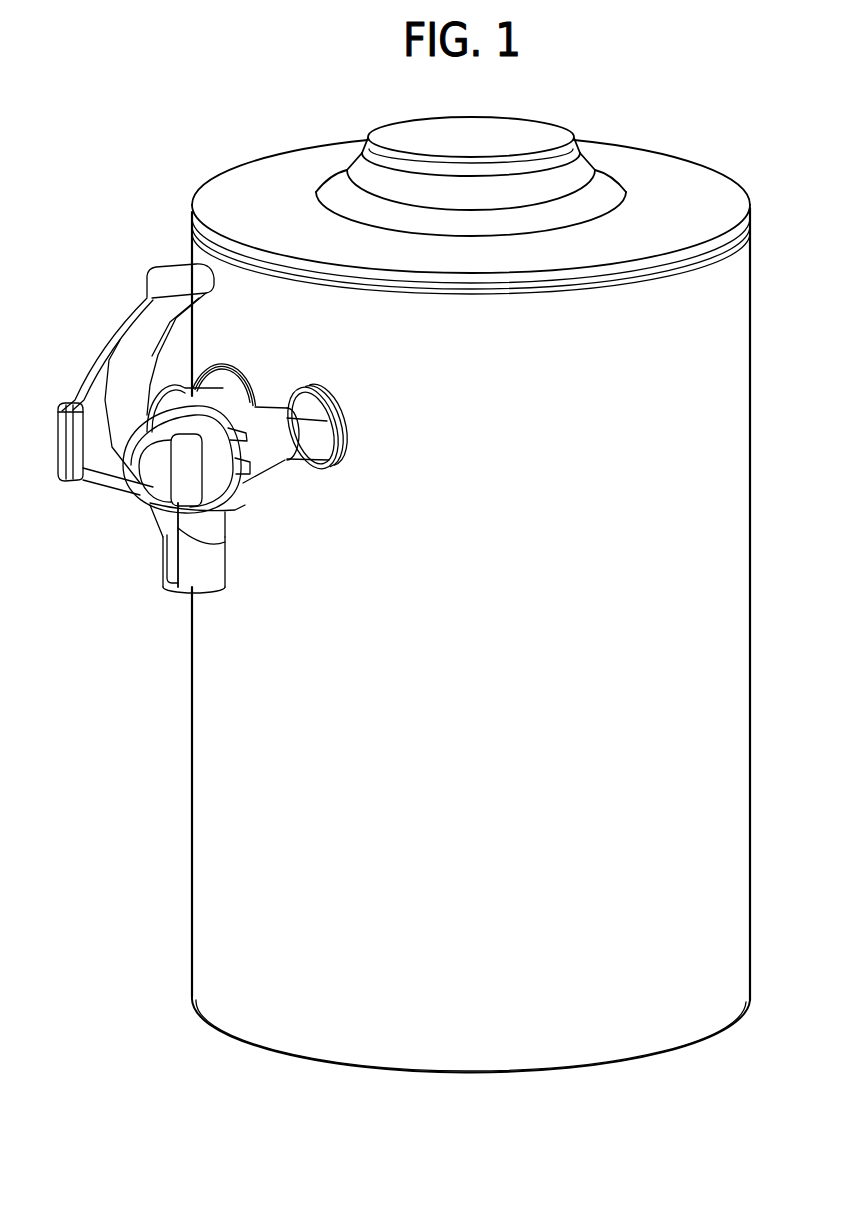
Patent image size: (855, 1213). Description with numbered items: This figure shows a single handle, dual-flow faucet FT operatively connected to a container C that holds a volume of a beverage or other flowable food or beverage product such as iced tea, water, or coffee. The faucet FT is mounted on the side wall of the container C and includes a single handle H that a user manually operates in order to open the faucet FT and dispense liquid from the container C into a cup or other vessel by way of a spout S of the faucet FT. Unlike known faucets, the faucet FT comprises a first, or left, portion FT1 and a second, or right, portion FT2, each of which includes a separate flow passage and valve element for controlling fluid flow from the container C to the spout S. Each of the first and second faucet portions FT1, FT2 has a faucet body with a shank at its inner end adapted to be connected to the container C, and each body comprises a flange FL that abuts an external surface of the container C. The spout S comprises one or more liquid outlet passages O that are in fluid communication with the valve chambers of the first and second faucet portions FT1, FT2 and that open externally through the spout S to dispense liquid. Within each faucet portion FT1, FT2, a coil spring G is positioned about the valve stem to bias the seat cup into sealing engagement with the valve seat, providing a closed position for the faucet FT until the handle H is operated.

The container C is at (215, 718).
The handle H is at (143, 342).
The faucet FT is at (156, 526).
The first faucet portion FT1 is at (176, 378).
The second faucet portion FT2 is at (256, 396).
The flange FL is at (322, 450).
The coil spring G is at (233, 392).
The spout S is at (163, 575).
The liquid outlet passage O is at (183, 590).